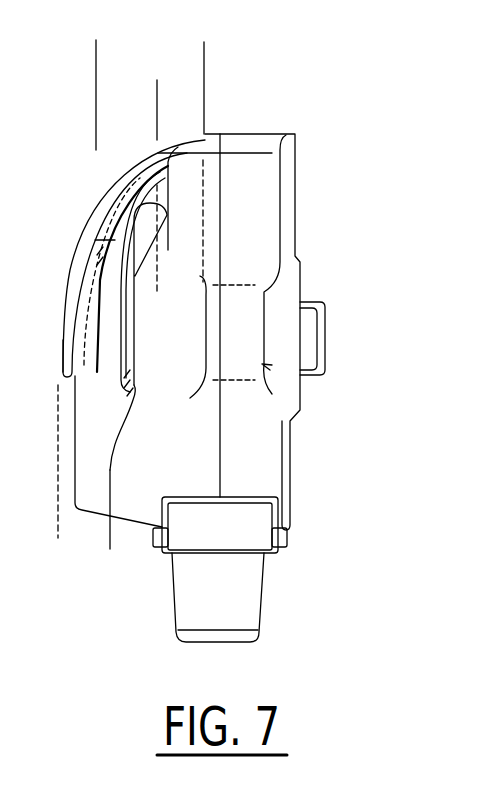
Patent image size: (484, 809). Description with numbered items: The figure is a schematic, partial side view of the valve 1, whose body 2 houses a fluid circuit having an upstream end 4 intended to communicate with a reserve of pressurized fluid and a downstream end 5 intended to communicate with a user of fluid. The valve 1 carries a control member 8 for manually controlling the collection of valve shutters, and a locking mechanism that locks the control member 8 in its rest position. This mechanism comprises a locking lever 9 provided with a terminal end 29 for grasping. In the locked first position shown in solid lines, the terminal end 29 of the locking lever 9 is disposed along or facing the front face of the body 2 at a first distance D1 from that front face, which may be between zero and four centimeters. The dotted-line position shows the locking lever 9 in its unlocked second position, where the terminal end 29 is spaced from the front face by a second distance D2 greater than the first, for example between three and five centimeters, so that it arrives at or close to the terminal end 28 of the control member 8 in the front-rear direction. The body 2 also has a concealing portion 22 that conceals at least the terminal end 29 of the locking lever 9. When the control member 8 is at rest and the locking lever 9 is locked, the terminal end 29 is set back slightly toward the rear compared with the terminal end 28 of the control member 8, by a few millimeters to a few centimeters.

The valve 1 is at (364, 389).
The body 2 is at (268, 468).
The upstream end 4 is at (232, 646).
The downstream end 5 is at (325, 322).
The control member 8 is at (70, 278).
The locking lever 9 is at (193, 269).
The concealing portion 22 is at (264, 366).
The terminal end of the control lever 28 is at (60, 352).
The terminal end for grasping 29 is at (82, 485).
The first distance D1 is at (204, 96).
The second distance D2 is at (204, 57).